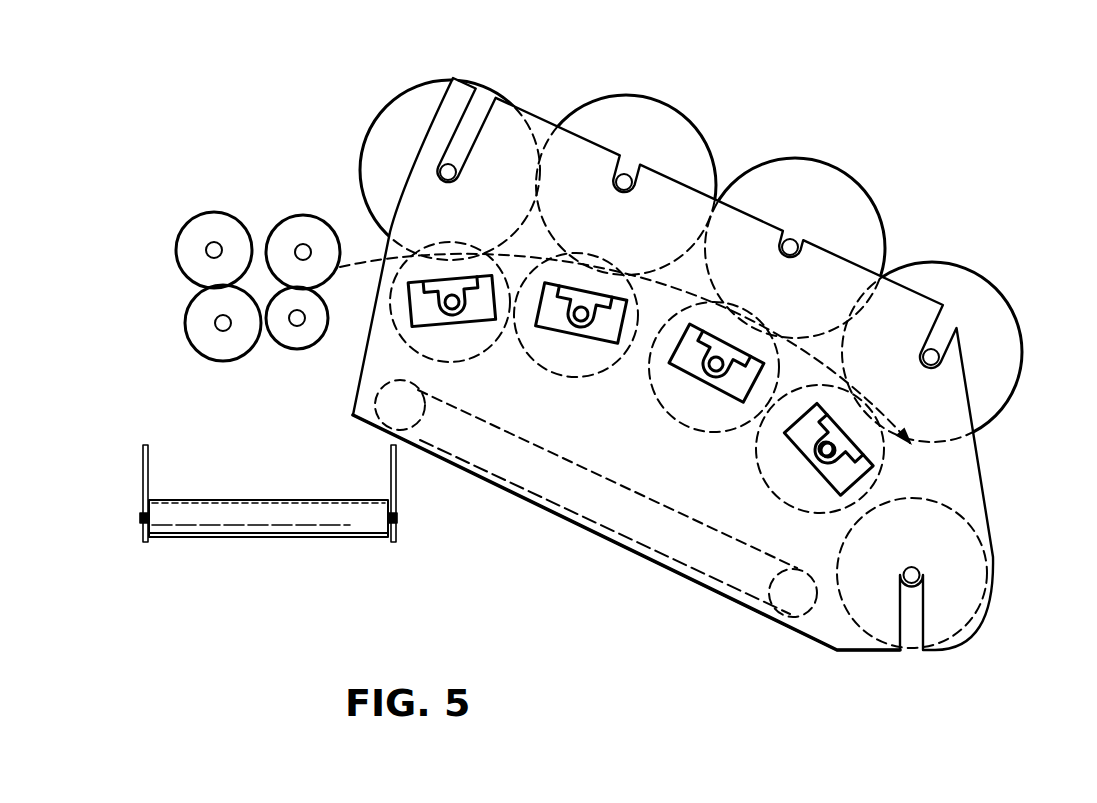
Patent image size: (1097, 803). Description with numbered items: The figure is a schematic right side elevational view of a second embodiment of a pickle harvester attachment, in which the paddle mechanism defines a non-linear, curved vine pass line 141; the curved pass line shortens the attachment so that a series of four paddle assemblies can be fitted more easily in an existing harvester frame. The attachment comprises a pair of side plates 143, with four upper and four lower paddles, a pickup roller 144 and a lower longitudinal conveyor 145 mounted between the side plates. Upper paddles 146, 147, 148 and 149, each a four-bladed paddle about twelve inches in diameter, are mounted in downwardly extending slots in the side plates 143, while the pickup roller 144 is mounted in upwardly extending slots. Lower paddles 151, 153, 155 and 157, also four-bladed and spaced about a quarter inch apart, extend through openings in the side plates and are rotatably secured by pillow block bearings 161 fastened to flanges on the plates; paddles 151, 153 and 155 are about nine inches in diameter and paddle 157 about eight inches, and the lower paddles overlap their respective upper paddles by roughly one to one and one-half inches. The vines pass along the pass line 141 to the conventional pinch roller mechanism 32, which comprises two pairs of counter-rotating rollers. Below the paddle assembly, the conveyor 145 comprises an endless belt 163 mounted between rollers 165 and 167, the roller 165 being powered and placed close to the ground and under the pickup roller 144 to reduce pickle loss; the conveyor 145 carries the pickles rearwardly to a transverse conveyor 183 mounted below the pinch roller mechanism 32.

The pinch roller mechanism 32 is at (179, 216).
The curved vine pass line 141 is at (378, 260).
The side plates 143 is at (372, 376).
The pickup roller 144 is at (965, 550).
The lower longitudinal conveyor 145 is at (668, 549).
The upper paddle 146 is at (988, 305).
The upper paddle 147 is at (863, 213).
The upper paddle 148 is at (693, 148).
The upper paddle 149 is at (408, 103).
The lower paddle 151 is at (770, 470).
The lower paddle 153 is at (680, 412).
The lower paddle 155 is at (577, 382).
The lower paddle 157 is at (473, 347).
The pillow block bearings 161 is at (843, 445).
The endless belt 163 is at (295, 528).
The roller 165 is at (788, 610).
The roller 167 is at (385, 417).
The transverse conveyor 183 is at (497, 428).